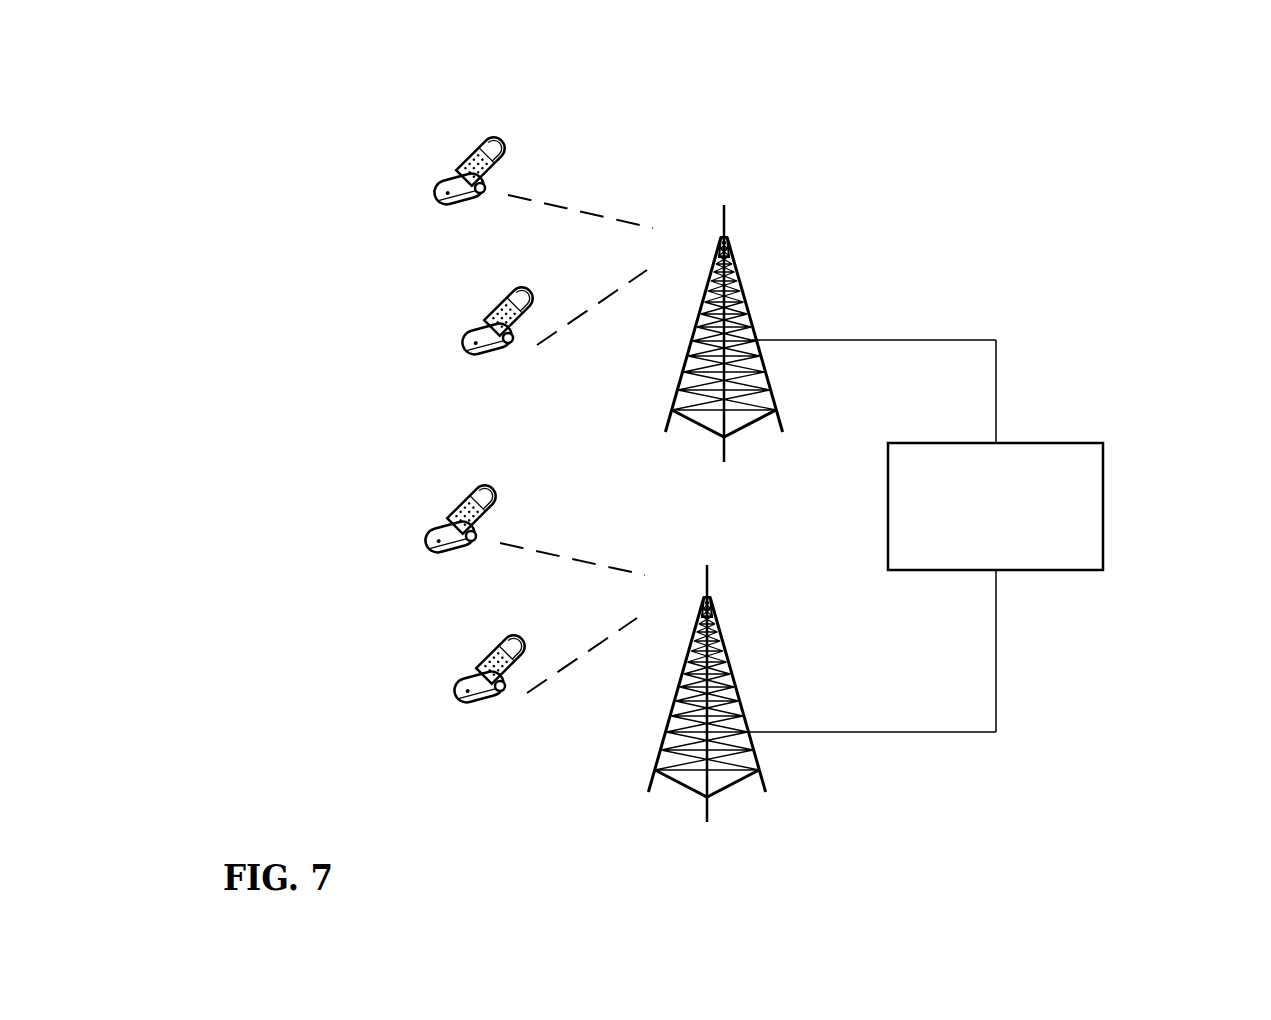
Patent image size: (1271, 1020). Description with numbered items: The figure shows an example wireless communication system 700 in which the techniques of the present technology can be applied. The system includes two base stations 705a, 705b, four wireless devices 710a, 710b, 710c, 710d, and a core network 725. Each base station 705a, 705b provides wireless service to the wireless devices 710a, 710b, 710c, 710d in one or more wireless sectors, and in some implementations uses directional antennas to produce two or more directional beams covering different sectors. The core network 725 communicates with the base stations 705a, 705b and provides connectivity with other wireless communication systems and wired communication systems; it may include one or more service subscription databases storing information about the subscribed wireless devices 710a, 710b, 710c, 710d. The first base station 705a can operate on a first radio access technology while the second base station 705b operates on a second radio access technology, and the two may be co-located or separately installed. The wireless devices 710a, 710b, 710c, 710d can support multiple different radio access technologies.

The wireless communication system 700 is at (244, 75).
The first base station 705a is at (738, 292).
The second base station 705b is at (710, 592).
The wireless device 710a is at (467, 148).
The wireless device 710b is at (494, 297).
The wireless device 710c is at (457, 494).
The wireless device 710d is at (485, 644).
The core network 725 is at (900, 443).